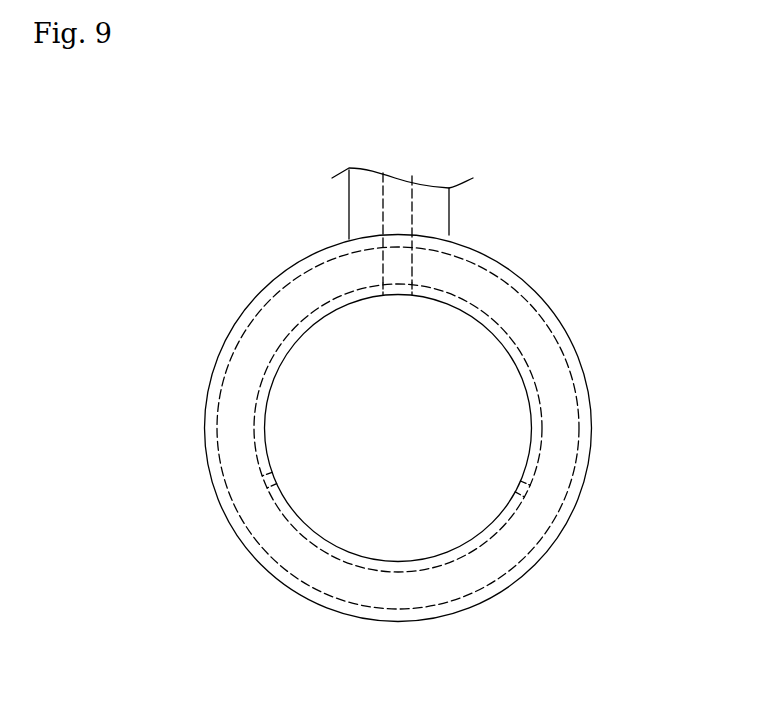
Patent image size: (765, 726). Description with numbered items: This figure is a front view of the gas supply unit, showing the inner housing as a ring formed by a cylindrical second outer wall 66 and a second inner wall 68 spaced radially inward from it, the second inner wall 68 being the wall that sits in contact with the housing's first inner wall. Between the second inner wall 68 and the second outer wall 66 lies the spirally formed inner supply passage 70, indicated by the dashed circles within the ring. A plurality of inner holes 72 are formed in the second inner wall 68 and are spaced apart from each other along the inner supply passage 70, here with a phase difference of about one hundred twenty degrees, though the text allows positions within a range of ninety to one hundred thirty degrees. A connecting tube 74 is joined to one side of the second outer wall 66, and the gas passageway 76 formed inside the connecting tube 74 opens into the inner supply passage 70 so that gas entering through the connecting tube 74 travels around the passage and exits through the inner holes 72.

The second outer wall 66 is at (305, 602).
The second inner wall 68 is at (403, 559).
The inner supply passage 70 is at (559, 415).
The inner holes 72 is at (404, 286).
The connecting tube 74 is at (450, 203).
The gas passageway 76 is at (403, 197).